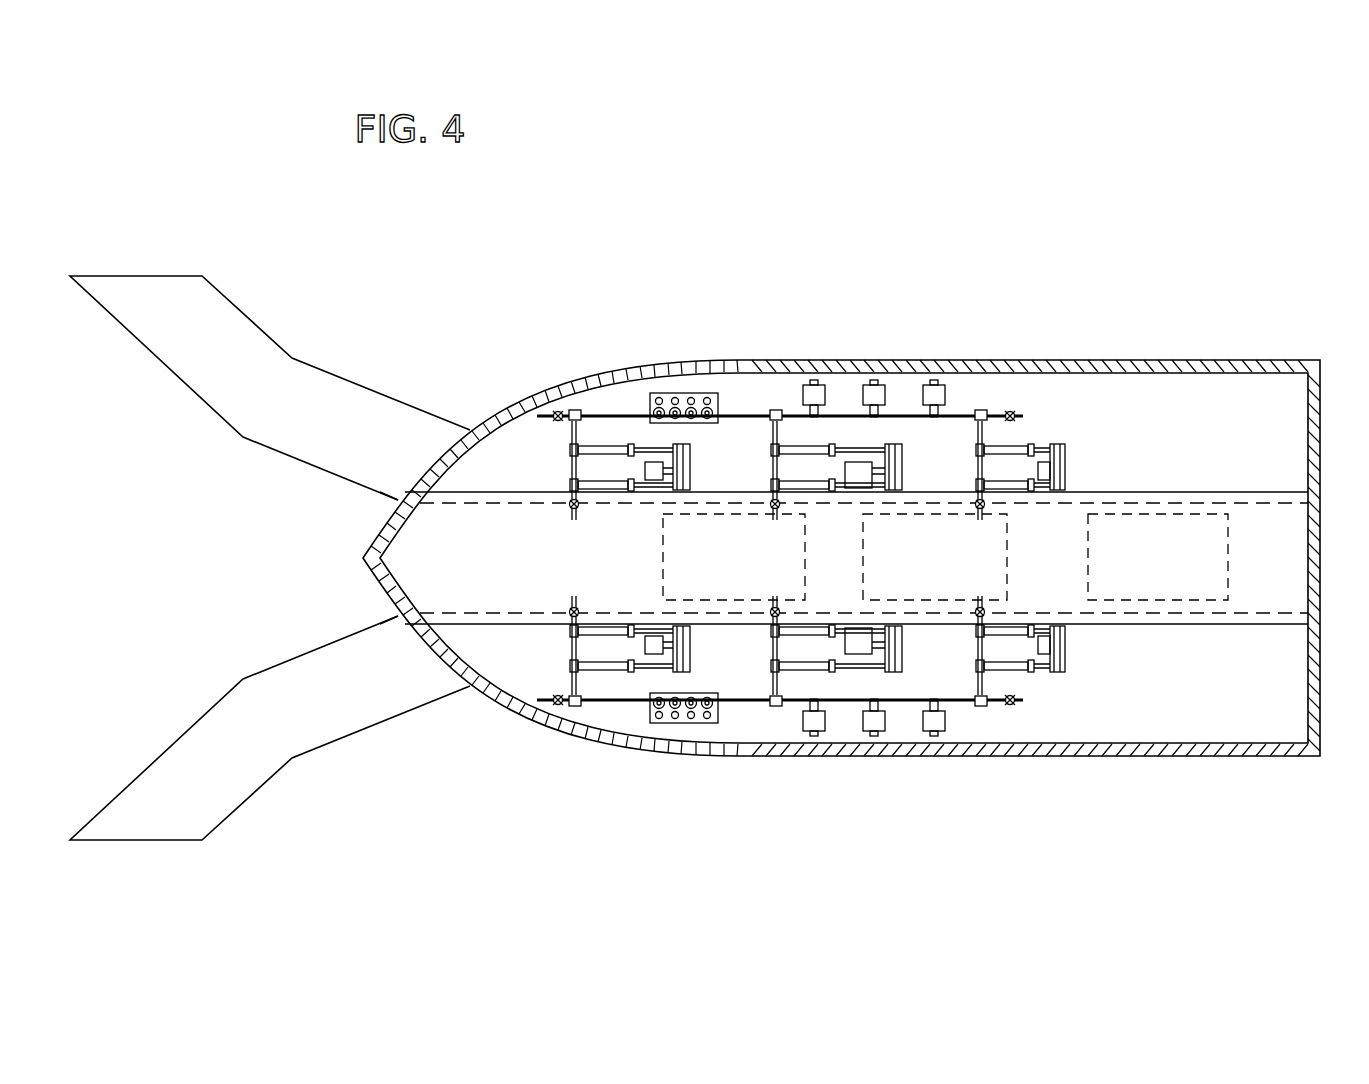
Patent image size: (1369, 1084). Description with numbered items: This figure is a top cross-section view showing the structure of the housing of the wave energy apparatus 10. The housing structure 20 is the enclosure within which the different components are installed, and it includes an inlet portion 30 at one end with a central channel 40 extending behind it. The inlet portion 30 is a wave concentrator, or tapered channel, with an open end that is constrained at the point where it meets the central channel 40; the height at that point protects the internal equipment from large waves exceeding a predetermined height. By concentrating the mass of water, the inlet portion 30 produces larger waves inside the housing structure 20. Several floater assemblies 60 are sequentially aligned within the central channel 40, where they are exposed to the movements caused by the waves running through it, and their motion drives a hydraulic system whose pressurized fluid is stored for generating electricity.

The wave energy conversion apparatus 10 is at (1188, 450).
The housing structure 20 is at (1088, 760).
The inlet portion 30 is at (270, 558).
The central channel 40 is at (500, 576).
The floater assembly 60 is at (658, 558).